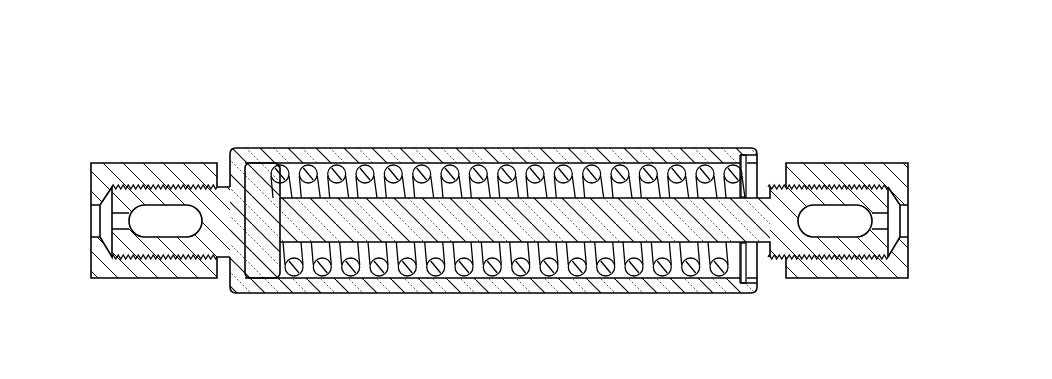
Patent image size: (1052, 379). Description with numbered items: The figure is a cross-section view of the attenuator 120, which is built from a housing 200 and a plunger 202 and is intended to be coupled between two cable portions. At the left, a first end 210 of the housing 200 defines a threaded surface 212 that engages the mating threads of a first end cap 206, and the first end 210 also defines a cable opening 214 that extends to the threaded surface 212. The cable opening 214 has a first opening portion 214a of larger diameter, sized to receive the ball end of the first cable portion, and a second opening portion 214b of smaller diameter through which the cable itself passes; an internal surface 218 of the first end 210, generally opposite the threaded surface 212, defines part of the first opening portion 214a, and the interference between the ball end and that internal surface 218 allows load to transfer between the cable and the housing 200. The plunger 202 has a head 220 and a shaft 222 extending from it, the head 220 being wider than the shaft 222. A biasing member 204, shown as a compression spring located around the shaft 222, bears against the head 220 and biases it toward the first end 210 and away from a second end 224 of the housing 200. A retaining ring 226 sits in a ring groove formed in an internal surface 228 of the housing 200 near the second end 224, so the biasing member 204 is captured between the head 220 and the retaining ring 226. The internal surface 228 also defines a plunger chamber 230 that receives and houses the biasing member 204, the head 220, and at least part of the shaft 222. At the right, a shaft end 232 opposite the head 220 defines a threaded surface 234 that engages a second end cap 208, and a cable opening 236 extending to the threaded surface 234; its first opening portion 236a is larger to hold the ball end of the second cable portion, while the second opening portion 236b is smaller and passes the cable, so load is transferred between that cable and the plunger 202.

The attenuator 120 is at (106, 80).
The housing 200 is at (580, 153).
The plunger 202 is at (262, 56).
The biasing member 204 is at (650, 173).
The first end cap 206 is at (110, 168).
The second end cap 208 is at (886, 170).
The first end 210 is at (152, 246).
The threaded surface 212 is at (166, 187).
The cable opening 214 is at (134, 269).
The first opening portion 214a is at (131, 215).
The second opening portion 214b is at (111, 225).
The internal surface 218 is at (135, 239).
The head 220 is at (255, 185).
The shaft 222 is at (357, 213).
The second end 224 is at (757, 156).
The retaining ring 226 is at (748, 280).
The internal surface 228 is at (447, 268).
The plunger chamber 230 is at (513, 115).
The shaft end 232 is at (863, 243).
The threaded surface 234 is at (805, 187).
The cable opening 236 is at (872, 268).
The first opening portion 236a is at (800, 215).
The second opening portion 236b is at (893, 225).